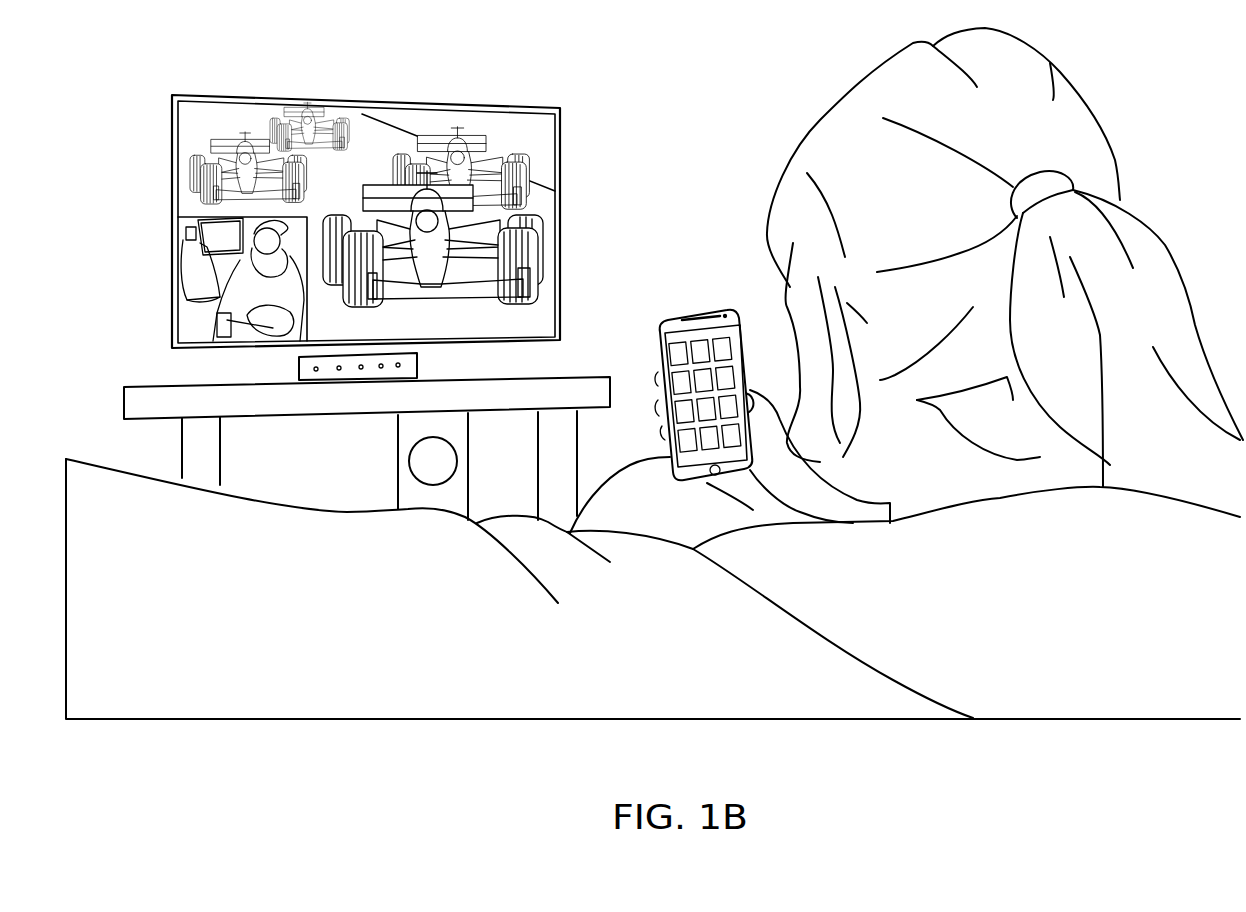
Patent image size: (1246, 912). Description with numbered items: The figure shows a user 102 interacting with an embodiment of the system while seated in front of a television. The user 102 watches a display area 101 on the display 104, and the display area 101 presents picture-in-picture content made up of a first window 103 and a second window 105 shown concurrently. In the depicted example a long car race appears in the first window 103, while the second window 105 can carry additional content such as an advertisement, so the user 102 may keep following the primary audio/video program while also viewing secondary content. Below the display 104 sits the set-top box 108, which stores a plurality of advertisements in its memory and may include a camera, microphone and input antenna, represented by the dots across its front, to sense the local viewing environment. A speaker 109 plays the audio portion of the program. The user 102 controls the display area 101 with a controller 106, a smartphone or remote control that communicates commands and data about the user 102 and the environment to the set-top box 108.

The display area 101 is at (523, 125).
The user 102 is at (1095, 166).
The first window 103 is at (545, 242).
The display 104 is at (172, 152).
The second window 105 is at (190, 312).
The controller 106 is at (700, 308).
The set-top box 108 is at (298, 365).
The speaker 109 is at (398, 437).